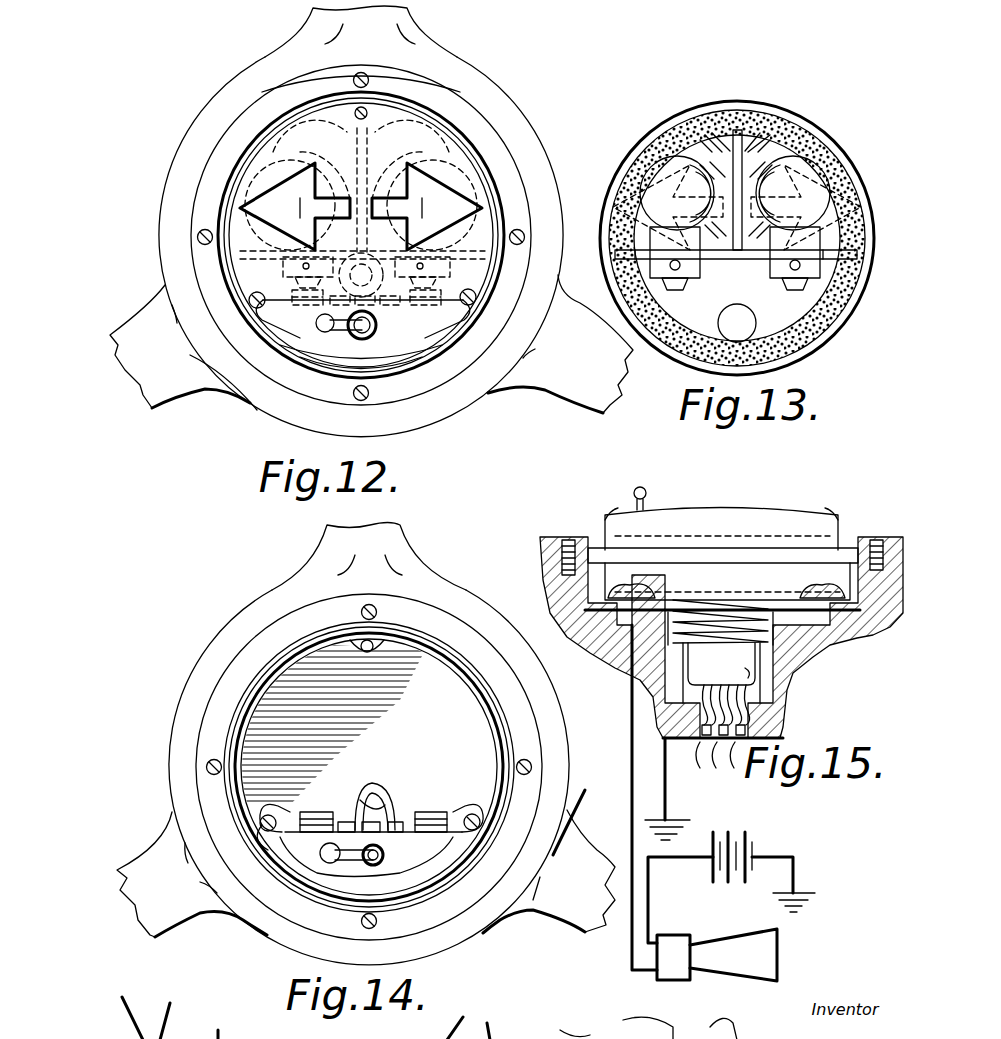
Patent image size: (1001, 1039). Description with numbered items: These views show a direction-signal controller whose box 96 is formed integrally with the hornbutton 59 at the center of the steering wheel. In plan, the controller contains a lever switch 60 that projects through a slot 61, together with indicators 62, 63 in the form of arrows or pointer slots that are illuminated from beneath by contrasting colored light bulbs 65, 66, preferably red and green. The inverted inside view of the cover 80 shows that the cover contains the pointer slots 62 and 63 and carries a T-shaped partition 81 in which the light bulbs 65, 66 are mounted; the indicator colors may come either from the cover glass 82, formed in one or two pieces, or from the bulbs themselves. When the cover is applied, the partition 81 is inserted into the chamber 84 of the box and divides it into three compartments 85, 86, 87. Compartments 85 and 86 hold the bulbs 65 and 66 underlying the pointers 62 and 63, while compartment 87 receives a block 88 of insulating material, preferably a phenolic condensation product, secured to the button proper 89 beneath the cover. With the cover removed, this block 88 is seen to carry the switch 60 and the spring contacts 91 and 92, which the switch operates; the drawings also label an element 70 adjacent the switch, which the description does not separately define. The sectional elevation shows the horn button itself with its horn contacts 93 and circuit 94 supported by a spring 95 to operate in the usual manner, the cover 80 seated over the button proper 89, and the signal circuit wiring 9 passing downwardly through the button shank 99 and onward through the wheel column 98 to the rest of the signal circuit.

In FIG. 15, the signal circuit wiring 9 is at (713, 762).
In FIG. 12, the hornbutton 59 is at (463, 138).
In FIG. 15, the hornbutton 59 is at (773, 518).
In FIG. 12, the lever switch 60 is at (353, 340).
In FIG. 14, the lever switch 60 is at (320, 853).
In FIG. 15, the lever switch 60 is at (646, 495).
In FIG. 12, the slot 61 is at (378, 338).
In FIG. 13, the slot 61 is at (757, 317).
In FIG. 14, the slot 61 is at (373, 855).
In FIG. 12, the indicator 62 is at (455, 186).
In FIG. 13, the indicator 62 is at (828, 168).
In FIG. 12, the indicator 63 is at (295, 178).
In FIG. 13, the indicator 63 is at (683, 168).
In FIG. 12, the light bulb 65 is at (447, 132).
In FIG. 13, the light bulb 65 is at (790, 152).
In FIG. 12, the light bulb 66 is at (272, 175).
In FIG. 13, the light bulb 66 is at (688, 170).
In FIG. 12, the switch lever 70 is at (318, 322).
In FIG. 14, the switch lever 70 is at (348, 825).
In FIG. 15, the switch lever 70 is at (634, 490).
In FIG. 12, the cover 80 is at (463, 327).
In FIG. 13, the partition 81 is at (741, 260).
In FIG. 13, the cover glass 82 is at (717, 133).
In FIG. 12, the chamber 84 is at (379, 189).
In FIG. 14, the chamber 84 is at (310, 660).
In FIG. 12, the compartment 85 is at (410, 160).
In FIG. 12, the compartment 86 is at (311, 160).
In FIG. 12, the compartment 87 is at (378, 291).
In FIG. 12, the block 88 is at (425, 347).
In FIG. 13, the block 88 is at (810, 300).
In FIG. 14, the block 88 is at (402, 832).
In FIG. 14, the button proper 89 is at (262, 773).
In FIG. 15, the button proper 89 is at (585, 586).
In FIG. 12, the spring contact 91 is at (290, 290).
In FIG. 14, the spring contact 91 is at (308, 812).
In FIG. 12, the spring contact 92 is at (441, 296).
In FIG. 14, the spring contact 92 is at (437, 812).
In FIG. 15, the horn contacts 93 is at (665, 608).
In FIG. 14, the circuit 94 is at (582, 813).
In FIG. 15, the circuit 94 is at (644, 797).
In FIG. 15, the spring 95 is at (730, 643).
In FIG. 15, the box 96 is at (605, 580).
In FIG. 15, the wheel column 98 is at (785, 731).
In FIG. 15, the button shank 99 is at (756, 686).